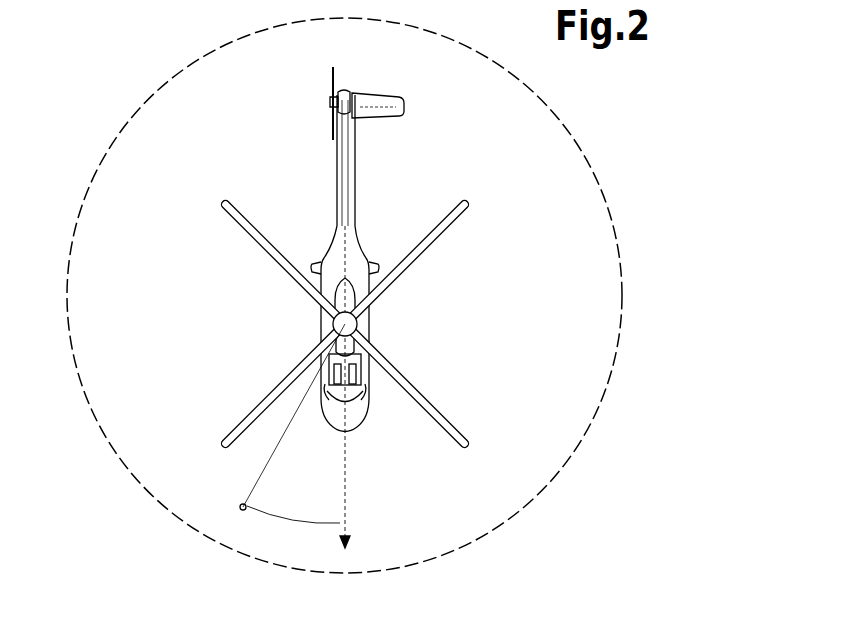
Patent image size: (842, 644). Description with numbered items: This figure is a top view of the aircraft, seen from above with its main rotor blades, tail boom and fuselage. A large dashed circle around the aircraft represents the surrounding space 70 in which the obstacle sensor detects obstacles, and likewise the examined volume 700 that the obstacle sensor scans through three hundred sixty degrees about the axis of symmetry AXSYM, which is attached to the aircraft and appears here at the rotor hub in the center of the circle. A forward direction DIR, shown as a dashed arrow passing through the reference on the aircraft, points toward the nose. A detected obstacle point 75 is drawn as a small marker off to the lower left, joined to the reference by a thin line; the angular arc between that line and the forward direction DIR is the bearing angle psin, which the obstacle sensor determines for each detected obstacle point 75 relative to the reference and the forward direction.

The surrounding space 70 is at (333, 303).
The examined volume 700 is at (285, 144).
The detected obstacle point 75 is at (240, 507).
The axis of symmetry AXSYM is at (378, 277).
The forward direction DIR is at (347, 461).
The bearing angle psin is at (293, 528).